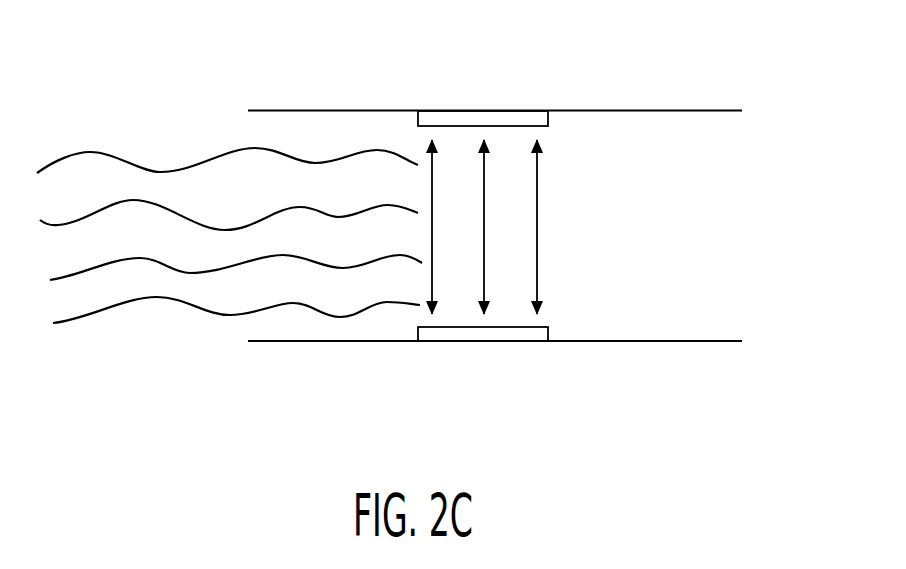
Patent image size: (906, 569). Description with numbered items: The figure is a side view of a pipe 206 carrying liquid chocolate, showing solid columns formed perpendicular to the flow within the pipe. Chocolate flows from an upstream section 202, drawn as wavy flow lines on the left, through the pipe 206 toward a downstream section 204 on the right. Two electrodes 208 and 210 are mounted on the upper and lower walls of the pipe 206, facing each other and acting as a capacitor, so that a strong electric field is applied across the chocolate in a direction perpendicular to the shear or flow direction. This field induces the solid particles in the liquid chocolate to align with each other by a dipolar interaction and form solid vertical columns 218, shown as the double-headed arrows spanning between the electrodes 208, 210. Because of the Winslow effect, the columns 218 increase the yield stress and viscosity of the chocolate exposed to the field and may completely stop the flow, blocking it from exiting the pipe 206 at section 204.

The section 202 is at (167, 143).
The section 204 is at (752, 176).
The pipe 206 is at (292, 106).
The electrode 208 is at (530, 111).
The electrode 210 is at (510, 336).
The solid vertical columns 218 is at (433, 255).